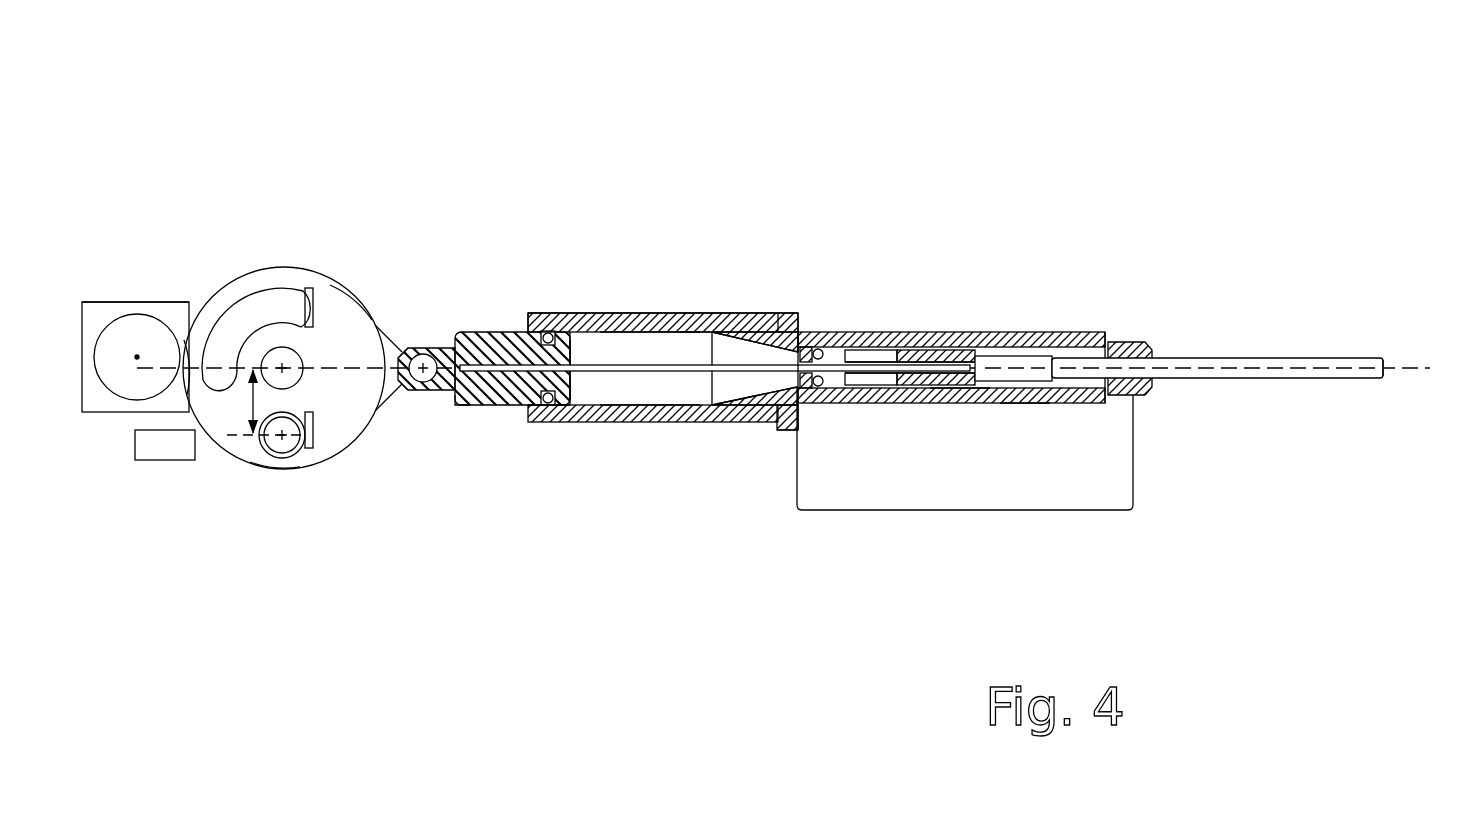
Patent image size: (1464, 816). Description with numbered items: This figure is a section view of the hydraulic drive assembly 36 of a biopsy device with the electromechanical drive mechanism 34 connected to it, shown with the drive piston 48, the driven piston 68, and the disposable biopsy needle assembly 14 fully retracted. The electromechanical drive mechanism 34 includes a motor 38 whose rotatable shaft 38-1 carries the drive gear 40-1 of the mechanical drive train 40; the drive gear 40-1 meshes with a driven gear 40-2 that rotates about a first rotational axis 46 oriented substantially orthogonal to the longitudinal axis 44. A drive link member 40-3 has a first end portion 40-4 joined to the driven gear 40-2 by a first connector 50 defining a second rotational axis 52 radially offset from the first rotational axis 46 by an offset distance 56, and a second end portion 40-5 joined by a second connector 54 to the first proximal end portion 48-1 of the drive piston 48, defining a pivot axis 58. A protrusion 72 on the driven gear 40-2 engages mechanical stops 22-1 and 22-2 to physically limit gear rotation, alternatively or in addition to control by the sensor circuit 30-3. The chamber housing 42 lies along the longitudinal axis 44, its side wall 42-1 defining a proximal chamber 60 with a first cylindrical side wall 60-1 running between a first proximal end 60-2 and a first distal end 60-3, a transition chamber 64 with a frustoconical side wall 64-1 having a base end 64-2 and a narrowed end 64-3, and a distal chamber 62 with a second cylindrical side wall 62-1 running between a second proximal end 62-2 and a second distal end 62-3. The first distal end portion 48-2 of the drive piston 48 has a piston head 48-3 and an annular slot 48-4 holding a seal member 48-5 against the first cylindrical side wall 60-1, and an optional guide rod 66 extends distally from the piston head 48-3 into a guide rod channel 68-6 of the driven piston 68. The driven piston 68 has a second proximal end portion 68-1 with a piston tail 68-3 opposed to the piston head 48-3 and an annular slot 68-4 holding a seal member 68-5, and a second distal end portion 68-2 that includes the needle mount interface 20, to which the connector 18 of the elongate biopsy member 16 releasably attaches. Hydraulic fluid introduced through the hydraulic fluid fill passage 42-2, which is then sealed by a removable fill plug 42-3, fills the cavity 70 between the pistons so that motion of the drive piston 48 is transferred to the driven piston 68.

The disposable biopsy needle assembly 14 is at (1249, 310).
The elongate biopsy member 16 is at (1281, 358).
The connector 18 is at (1133, 343).
The needle mount interface 20 is at (1108, 355).
The mechanical stop 22-1 is at (314, 300).
The mechanical stop 22-2 is at (316, 432).
The sensor circuit 30-3 is at (165, 445).
The electromechanical drive mechanism 34 is at (190, 133).
The hydraulic drive assembly 36 is at (612, 184).
The motor 38 is at (95, 302).
The rotatable shaft 38-1 is at (137, 357).
The mechanical drive train 40 is at (362, 477).
The drive gear 40-1 is at (184, 366).
The driven gear 40-2 is at (352, 296).
The drive link member 40-3 is at (397, 410).
The first end portion 40-4 is at (277, 489).
The second end portion 40-5 is at (424, 405).
The chamber housing 42 is at (780, 315).
The side wall 42-1 is at (744, 338).
The hydraulic fluid fill passage 42-2 is at (775, 405).
The removable fill plug 42-3 is at (788, 425).
The longitudinal axis 44 is at (1402, 368).
The first rotational axis 46 is at (285, 366).
The drive piston 48 is at (498, 330).
The first proximal end portion 48-1 is at (446, 407).
The first distal end portion 48-2 is at (553, 420).
The piston head 48-3 is at (590, 407).
The annular slot 48-4 is at (561, 345).
The seal member 48-5 is at (547, 334).
The first connector 50 is at (258, 442).
The second rotational axis 52 is at (285, 440).
The second connector 54 is at (422, 366).
The offset distance 56 is at (264, 452).
The pivot axis 58 is at (432, 352).
The proximal chamber 60 is at (623, 317).
The first cylindrical side wall 60-1 is at (641, 350).
The first proximal end 60-2 is at (517, 316).
The first distal end 60-3 is at (684, 342).
The distal chamber 62 is at (871, 340).
The second cylindrical side wall 62-1 is at (878, 355).
The second proximal end 62-2 is at (812, 335).
The second distal end 62-3 is at (1100, 338).
The transition chamber 64 is at (757, 330).
The frustoconical side wall 64-1 is at (763, 400).
The base end 64-2 is at (730, 333).
The narrowed end 64-3 is at (792, 335).
The guide rod 66 is at (662, 364).
The driven piston 68 is at (967, 511).
The second proximal end portion 68-1 is at (846, 386).
The second distal end portion 68-2 is at (1022, 404).
The piston tail 68-3 is at (818, 404).
The annular slot 68-4 is at (870, 384).
The seal member 68-5 is at (821, 388).
The guide rod channel 68-6 is at (958, 402).
The cavity 70 is at (656, 393).
The protrusion 72 is at (249, 298).